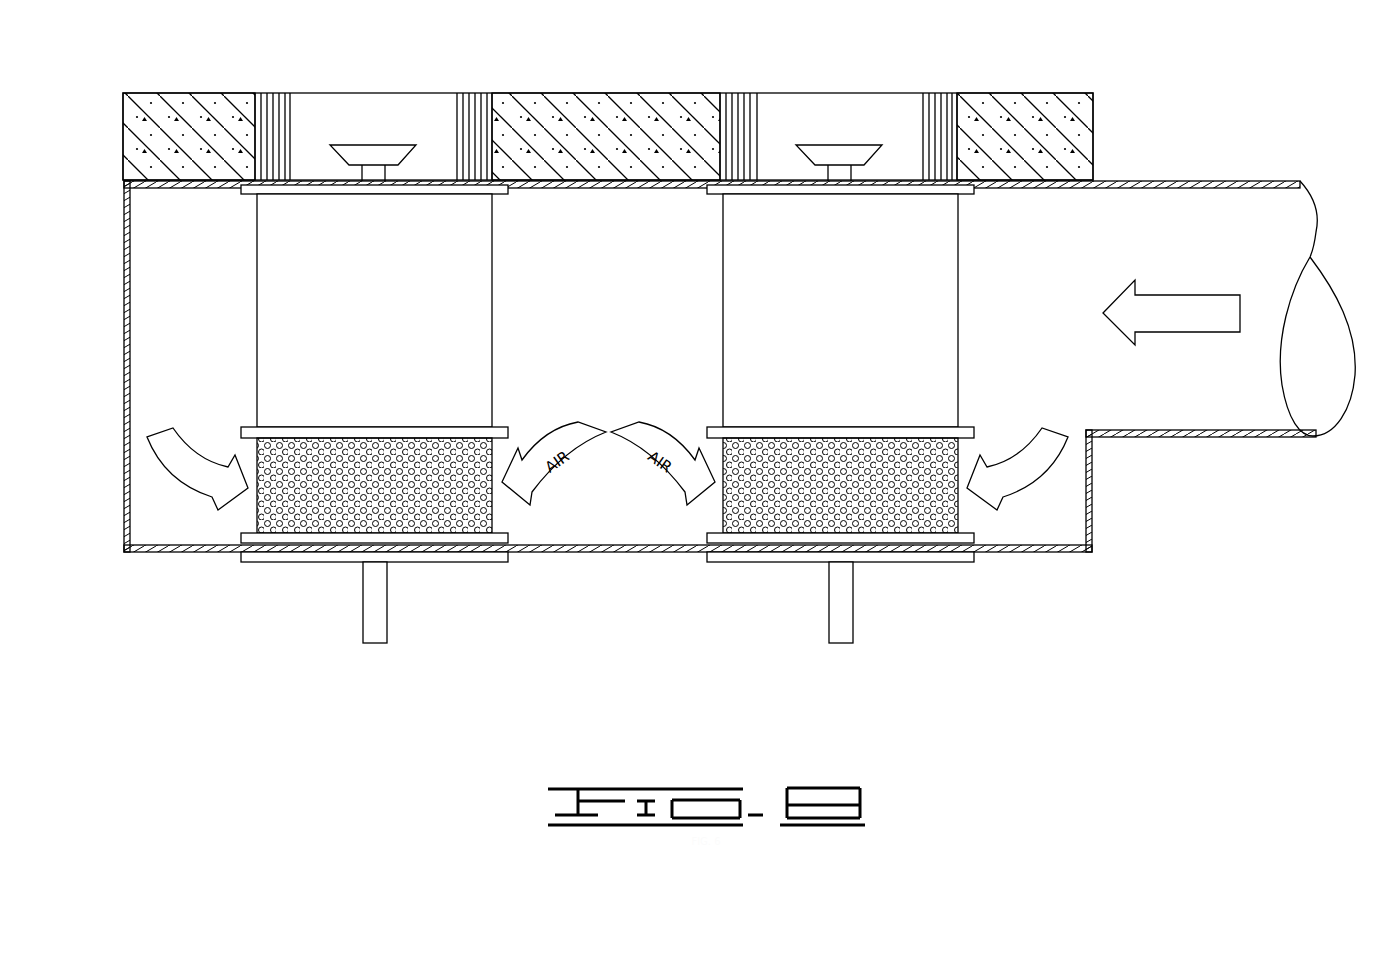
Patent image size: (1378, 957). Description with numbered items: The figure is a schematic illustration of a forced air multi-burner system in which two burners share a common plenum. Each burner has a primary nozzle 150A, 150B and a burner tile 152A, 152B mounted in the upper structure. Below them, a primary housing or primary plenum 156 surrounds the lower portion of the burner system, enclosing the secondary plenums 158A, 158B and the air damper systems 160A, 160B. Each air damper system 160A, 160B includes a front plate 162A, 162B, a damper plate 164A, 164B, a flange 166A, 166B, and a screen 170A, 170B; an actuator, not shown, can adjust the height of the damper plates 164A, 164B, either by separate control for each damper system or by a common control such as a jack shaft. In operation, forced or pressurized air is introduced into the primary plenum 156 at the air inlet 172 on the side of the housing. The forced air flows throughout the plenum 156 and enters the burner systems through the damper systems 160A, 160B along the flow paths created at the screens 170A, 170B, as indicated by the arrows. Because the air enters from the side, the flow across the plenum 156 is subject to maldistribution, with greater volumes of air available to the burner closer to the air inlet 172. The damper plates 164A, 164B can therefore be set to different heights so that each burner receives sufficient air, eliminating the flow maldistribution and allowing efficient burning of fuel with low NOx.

The primary nozzle 150A is at (360, 145).
The primary nozzle 150B is at (829, 144).
The burner tile 152A is at (472, 107).
The burner tile 152B is at (940, 102).
The primary plenum 156 is at (1040, 552).
The secondary plenum 158A is at (257, 272).
The secondary plenum 158B is at (723, 272).
The air damper system 160A is at (343, 437).
The air damper system 160B is at (833, 437).
The front plate 162A is at (445, 562).
The front plate 162B is at (893, 562).
The damper plate 164A is at (247, 535).
The damper plate 164B is at (715, 535).
The flange 166A is at (502, 425).
The flange 166B is at (970, 427).
The screen 170A is at (255, 453).
The screen 170B is at (963, 507).
The air inlet 172 is at (1178, 222).